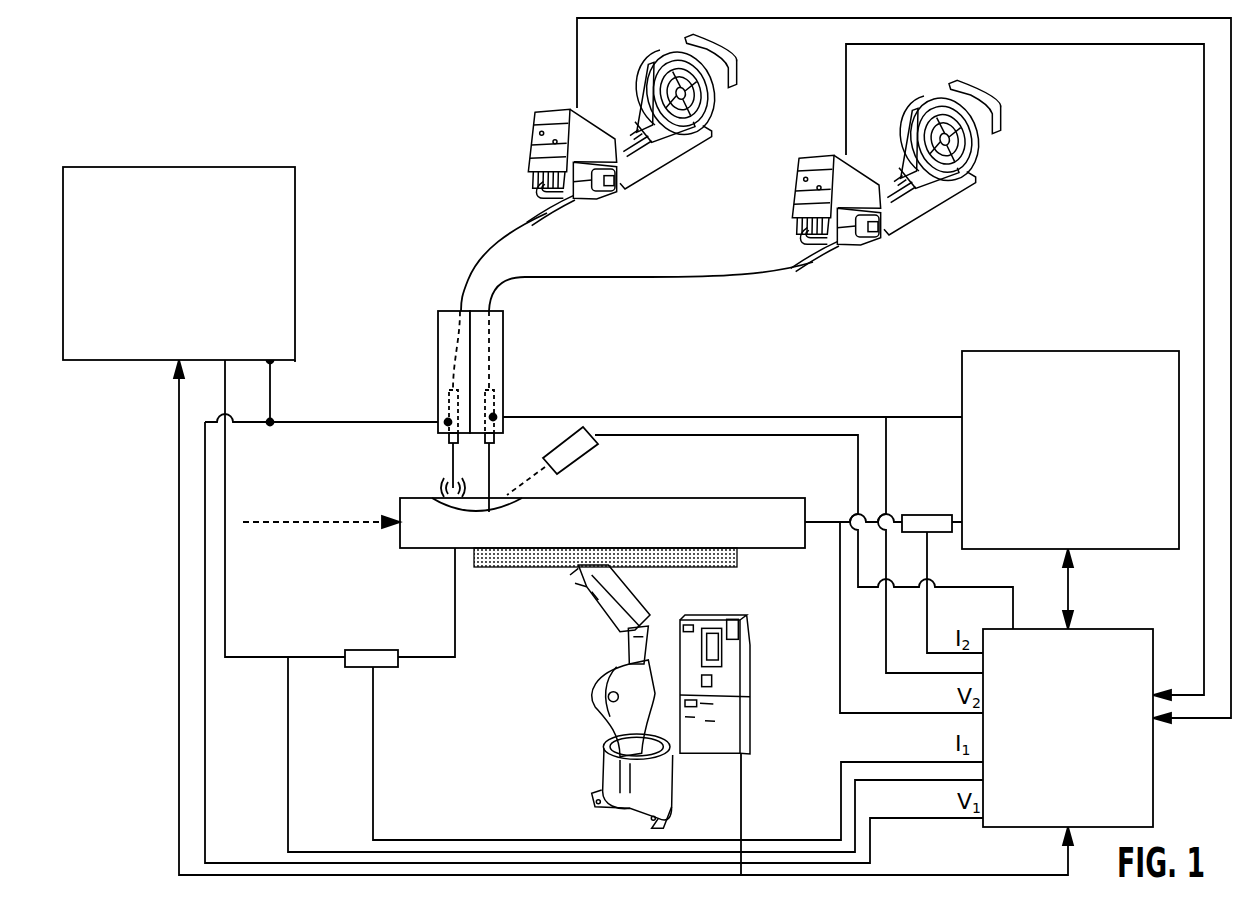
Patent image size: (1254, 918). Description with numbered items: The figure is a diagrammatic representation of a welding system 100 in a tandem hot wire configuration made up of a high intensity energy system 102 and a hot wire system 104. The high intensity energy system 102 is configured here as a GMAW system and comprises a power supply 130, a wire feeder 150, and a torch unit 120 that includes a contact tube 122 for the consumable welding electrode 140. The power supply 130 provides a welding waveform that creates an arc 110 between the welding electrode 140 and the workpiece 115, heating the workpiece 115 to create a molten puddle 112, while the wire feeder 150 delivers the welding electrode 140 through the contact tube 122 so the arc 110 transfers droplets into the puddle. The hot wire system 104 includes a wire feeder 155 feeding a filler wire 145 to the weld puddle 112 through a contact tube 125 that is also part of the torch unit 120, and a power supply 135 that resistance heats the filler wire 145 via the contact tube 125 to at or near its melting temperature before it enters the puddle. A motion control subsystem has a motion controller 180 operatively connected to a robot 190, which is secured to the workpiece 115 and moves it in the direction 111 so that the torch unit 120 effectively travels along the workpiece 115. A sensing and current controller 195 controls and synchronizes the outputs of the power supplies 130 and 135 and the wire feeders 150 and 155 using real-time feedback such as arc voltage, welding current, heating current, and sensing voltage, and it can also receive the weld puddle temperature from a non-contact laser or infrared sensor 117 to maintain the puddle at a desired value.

The welding system 100 is at (155, 98).
The high intensity energy system 102 is at (452, 175).
The hot wire system 104 is at (1080, 218).
The arc 110 is at (440, 480).
The direction 111 is at (333, 525).
The molten puddle 112 is at (441, 500).
The workpiece 115 is at (667, 498).
The sensor 117 is at (578, 460).
The torch unit 120 is at (503, 325).
The contact tube 122 is at (449, 392).
The contact tube 125 is at (491, 392).
The power supply 130 is at (228, 167).
The power supply 135 is at (1017, 351).
The welding electrode 140 is at (450, 458).
The filler wire 145 is at (583, 277).
The wire feeder 150 is at (663, 162).
The wire feeder 155 is at (928, 215).
The motion controller 180 is at (748, 665).
The robot 190 is at (602, 672).
The sensing and current controller 195 is at (1153, 797).